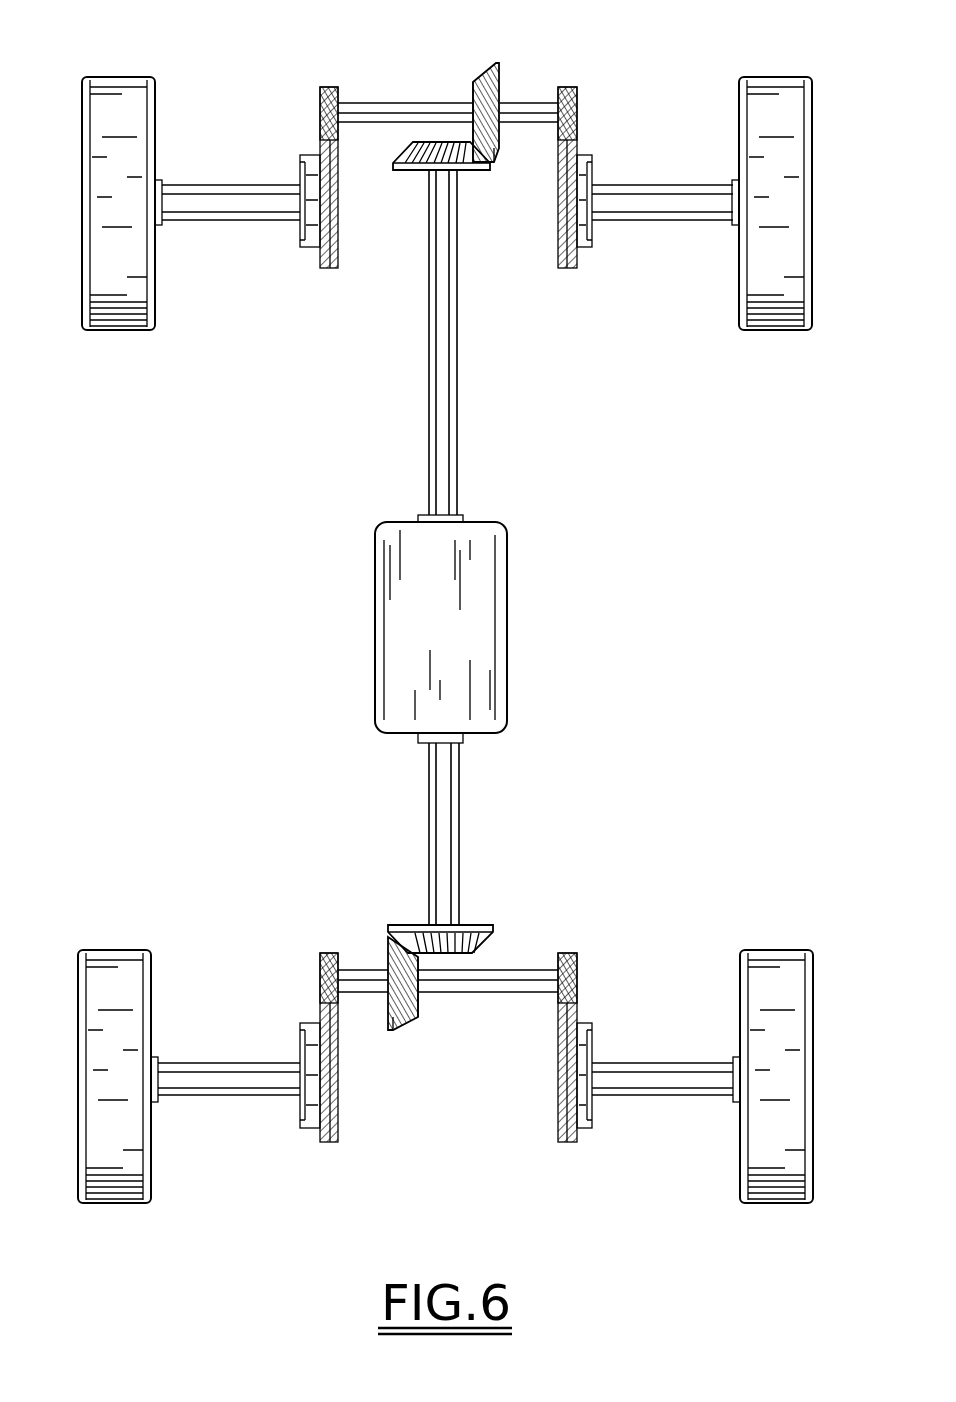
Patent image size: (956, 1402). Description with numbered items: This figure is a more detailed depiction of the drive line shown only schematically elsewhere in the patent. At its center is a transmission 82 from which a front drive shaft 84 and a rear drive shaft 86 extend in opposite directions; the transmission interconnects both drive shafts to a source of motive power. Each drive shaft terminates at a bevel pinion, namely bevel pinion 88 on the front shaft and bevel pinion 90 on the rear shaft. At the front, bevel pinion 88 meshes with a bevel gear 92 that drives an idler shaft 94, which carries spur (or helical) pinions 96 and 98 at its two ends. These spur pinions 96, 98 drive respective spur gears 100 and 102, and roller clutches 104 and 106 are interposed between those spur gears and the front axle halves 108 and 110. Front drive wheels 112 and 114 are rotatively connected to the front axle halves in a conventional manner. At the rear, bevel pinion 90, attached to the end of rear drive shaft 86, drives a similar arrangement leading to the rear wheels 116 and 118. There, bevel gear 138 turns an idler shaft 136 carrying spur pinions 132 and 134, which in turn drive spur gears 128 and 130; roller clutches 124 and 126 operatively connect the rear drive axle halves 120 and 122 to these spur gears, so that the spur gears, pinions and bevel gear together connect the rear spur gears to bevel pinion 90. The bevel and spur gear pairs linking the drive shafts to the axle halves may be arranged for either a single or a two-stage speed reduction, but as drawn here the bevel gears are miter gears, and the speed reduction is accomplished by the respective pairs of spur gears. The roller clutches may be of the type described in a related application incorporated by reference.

The transmission 82 is at (423, 656).
The front drive shaft 84 is at (455, 425).
The rear drive shaft 86 is at (458, 805).
The bevel pinion 88 is at (431, 176).
The bevel pinion 90 is at (488, 930).
The bevel gear 92 is at (480, 75).
The idler shaft 94 is at (405, 103).
The spur pinion 96 is at (324, 88).
The spur pinion 98 is at (570, 88).
The spur gear 100 is at (338, 265).
The spur gear 102 is at (558, 265).
The roller clutch 104 is at (303, 244).
The roller clutch 106 is at (590, 244).
The front axle half 108 is at (262, 185).
The front axle half 110 is at (640, 185).
The front drive wheel 112 is at (100, 216).
The front drive wheel 114 is at (756, 216).
The rear wheel 116 is at (93, 1093).
The rear wheel 118 is at (758, 1089).
The rear drive axle half 120 is at (262, 1063).
The rear drive axle half 122 is at (652, 1063).
The roller clutch 124 is at (303, 1120).
The roller clutch 126 is at (592, 1118).
The spur gear 128 is at (338, 1133).
The spur gear 130 is at (558, 1130).
The spur pinion 132 is at (320, 968).
The spur pinion 134 is at (577, 968).
The idler shaft 136 is at (505, 990).
The bevel gear 138 is at (388, 945).